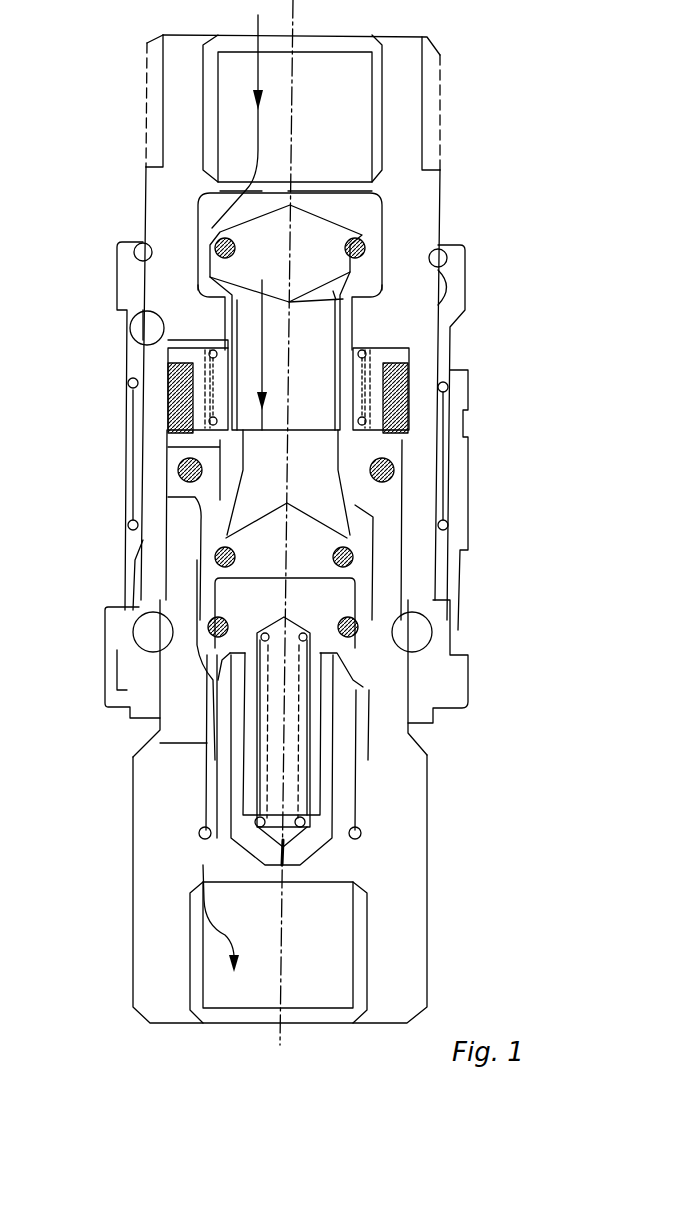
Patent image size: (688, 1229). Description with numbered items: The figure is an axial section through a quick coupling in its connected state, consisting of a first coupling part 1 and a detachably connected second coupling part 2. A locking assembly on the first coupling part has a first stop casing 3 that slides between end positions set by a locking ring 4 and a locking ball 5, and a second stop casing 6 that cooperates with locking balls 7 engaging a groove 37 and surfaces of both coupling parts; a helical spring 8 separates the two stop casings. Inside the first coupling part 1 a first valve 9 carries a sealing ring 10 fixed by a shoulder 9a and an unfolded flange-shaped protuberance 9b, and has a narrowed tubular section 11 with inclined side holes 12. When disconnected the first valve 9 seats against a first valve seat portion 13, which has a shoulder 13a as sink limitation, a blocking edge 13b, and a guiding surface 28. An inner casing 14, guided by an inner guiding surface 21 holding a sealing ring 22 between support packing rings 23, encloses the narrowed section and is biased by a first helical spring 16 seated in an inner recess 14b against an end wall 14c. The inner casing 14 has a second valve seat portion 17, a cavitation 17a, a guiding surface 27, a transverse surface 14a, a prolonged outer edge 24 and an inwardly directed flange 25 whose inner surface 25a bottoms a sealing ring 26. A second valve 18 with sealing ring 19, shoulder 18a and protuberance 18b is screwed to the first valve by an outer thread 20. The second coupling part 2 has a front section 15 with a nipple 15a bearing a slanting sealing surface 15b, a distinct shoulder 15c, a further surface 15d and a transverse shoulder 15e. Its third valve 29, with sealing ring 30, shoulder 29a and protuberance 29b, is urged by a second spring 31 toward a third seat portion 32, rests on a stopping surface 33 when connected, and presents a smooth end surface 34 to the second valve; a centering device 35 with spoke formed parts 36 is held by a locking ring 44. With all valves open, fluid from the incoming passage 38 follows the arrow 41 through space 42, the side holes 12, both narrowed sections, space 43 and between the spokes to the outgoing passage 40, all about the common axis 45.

The first coupling part 1 is at (462, 180).
The second coupling part 2 is at (472, 923).
The first stop casing 3 is at (455, 262).
The locking ring 4 is at (130, 242).
The locking ball 5 is at (150, 345).
The second stop casing 6 is at (450, 550).
The locking balls 7 is at (120, 648).
The helical spring 8 is at (450, 528).
The first valve 9 is at (340, 218).
The shoulder 9a is at (212, 262).
The flange-shaped protuberance 9b is at (225, 228).
The sealing ring 10 is at (125, 350).
The narrowed section 11 is at (412, 287).
The side holes 12 is at (430, 308).
The first valve seat portion 13 is at (182, 295).
The shoulder 13a is at (175, 310).
The blocking edge 13b is at (133, 330).
The inner casing 14 is at (168, 356).
The transverse surface 14a is at (440, 540).
The inner recess 14b is at (430, 345).
The end wall 14c is at (168, 400).
The front section 15 is at (175, 513).
The front section (nipple) 15a is at (190, 605).
The slanting sealing surface 15b is at (395, 470).
The distinct shoulder 15c is at (410, 510).
The further surface 15d is at (400, 500).
The transverse shoulder 15e is at (440, 520).
The first helical spring 16 is at (437, 420).
The second valve seat portion 17 is at (175, 440).
The cavitation 17a is at (180, 425).
The second valve 18 is at (210, 550).
The shoulder 18a is at (210, 565).
The flange-shaped protuberance 18b is at (215, 585).
The sealing ring 19 is at (395, 600).
The outer thread 20 is at (410, 362).
The inner guiding surface 21 is at (210, 385).
The sealing ring 22 is at (420, 397).
The support packing rings 23 is at (410, 372).
The prolonged outer edge 24 is at (178, 467).
The inwardly directed flange 25 is at (185, 490).
The inner surface 25a is at (150, 478).
The sealing ring 26 is at (395, 487).
The guiding surface 27 is at (420, 457).
The guiding surface 28 is at (380, 335).
The third valve 29 is at (420, 680).
The shoulder 29a is at (140, 624).
The flange-shaped protuberance 29b is at (130, 670).
The sealing ring 30 is at (430, 645).
The second spring 31 is at (320, 733).
The third seat portion 32 is at (190, 520).
The stopping surface 33 is at (207, 687).
The smooth end surface 34 is at (425, 620).
The centering device 35 is at (233, 763).
The spoke formed parts 36 is at (210, 740).
The groove 37 is at (120, 690).
The incoming passage 38 is at (362, 88).
The outgoing passage 40 is at (228, 860).
The arrow 41 is at (205, 795).
The space 42 is at (200, 197).
The space 43 is at (435, 575).
The locking ring 44 is at (361, 833).
The common axis 45 is at (295, 65).